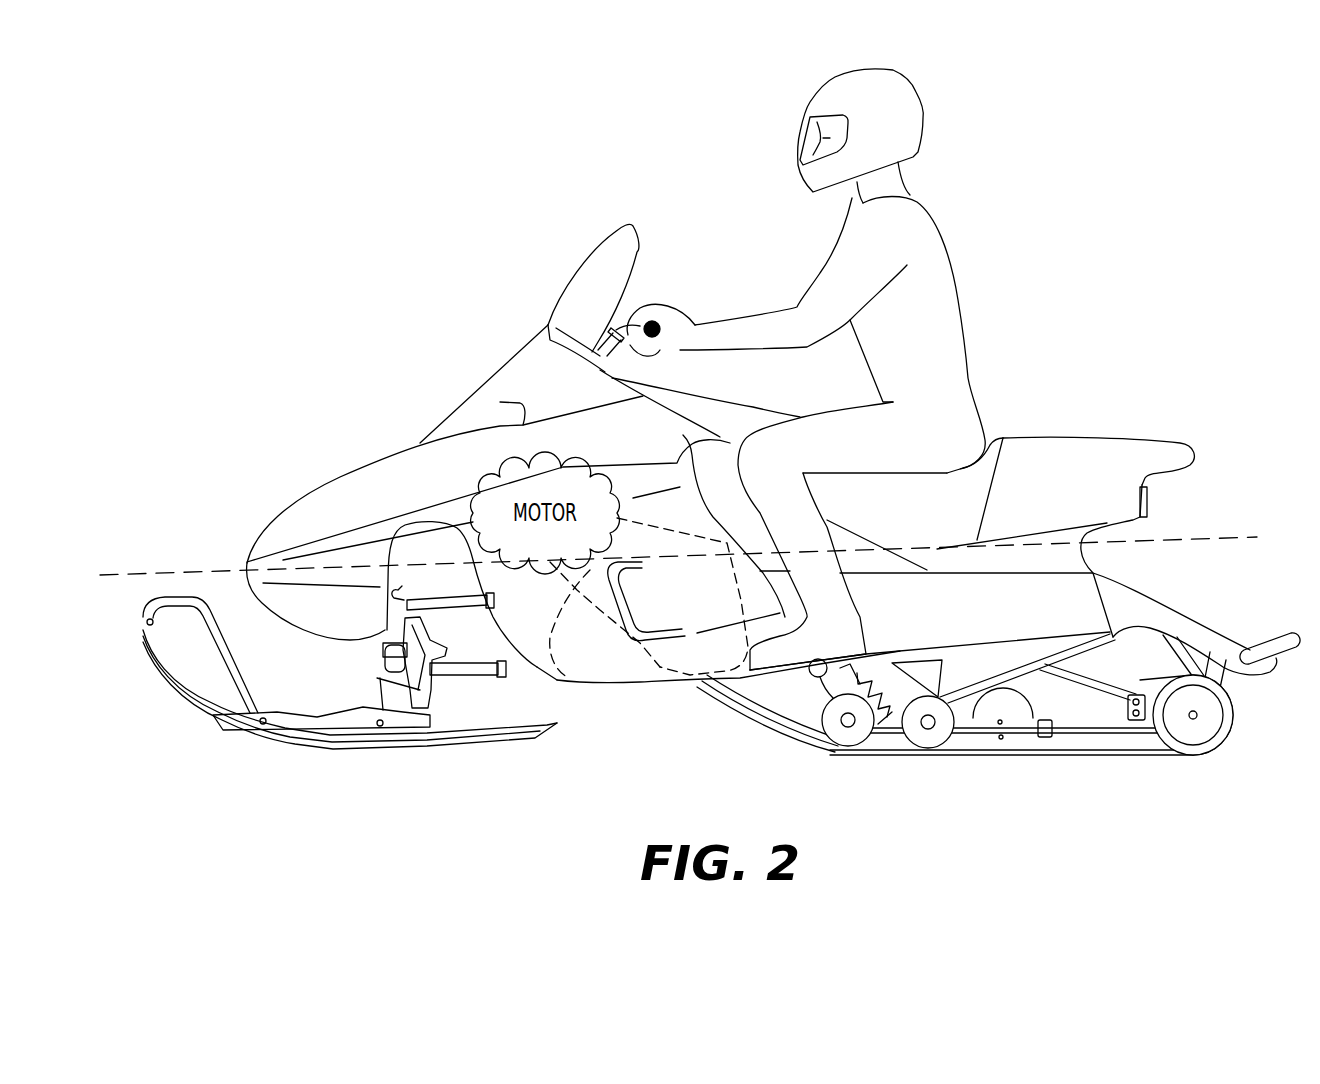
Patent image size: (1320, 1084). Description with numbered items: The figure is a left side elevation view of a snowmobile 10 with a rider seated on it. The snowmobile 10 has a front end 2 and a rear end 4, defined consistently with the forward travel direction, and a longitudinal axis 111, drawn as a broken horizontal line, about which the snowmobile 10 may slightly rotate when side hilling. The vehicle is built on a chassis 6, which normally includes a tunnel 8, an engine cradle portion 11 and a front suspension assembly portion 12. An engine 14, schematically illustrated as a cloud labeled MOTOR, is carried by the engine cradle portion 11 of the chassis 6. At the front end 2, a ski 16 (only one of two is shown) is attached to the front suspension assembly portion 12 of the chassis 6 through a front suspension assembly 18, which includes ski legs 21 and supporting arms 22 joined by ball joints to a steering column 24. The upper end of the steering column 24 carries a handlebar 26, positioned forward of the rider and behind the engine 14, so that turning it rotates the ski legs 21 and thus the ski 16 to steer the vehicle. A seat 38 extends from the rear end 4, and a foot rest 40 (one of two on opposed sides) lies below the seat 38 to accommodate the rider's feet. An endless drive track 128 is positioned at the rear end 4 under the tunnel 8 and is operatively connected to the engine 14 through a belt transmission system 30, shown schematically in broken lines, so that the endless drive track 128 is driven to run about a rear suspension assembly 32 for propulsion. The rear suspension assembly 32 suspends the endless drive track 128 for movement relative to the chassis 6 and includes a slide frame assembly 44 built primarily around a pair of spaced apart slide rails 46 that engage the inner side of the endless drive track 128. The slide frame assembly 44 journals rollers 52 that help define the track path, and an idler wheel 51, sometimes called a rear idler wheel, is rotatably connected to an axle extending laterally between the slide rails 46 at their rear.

The front end 2 is at (247, 560).
The rear end 4 is at (1197, 457).
The chassis 6 is at (660, 688).
The tunnel 8 is at (1100, 598).
The snowmobile 10 is at (518, 463).
The engine cradle portion 11 is at (603, 667).
The front suspension assembly portion 12 is at (380, 567).
The engine 14 is at (487, 487).
The ski 16 is at (207, 705).
The front suspension assembly 18 is at (383, 655).
The ski legs 21 is at (427, 708).
The supporting arms 22 is at (480, 678).
The steering column 24 is at (548, 325).
The handlebar 26 is at (656, 322).
The belt transmission system 30 is at (553, 685).
The rear suspension assembly 32 is at (988, 715).
The seat 38 is at (992, 448).
The foot rest 40 is at (822, 680).
The slide frame assembly 44 is at (1040, 676).
The slide rails 46 is at (980, 743).
The idler wheel 51 is at (1218, 712).
The rollers 52 is at (857, 748).
The longitudinal axis 111 is at (187, 575).
The endless drive track 128 is at (793, 741).